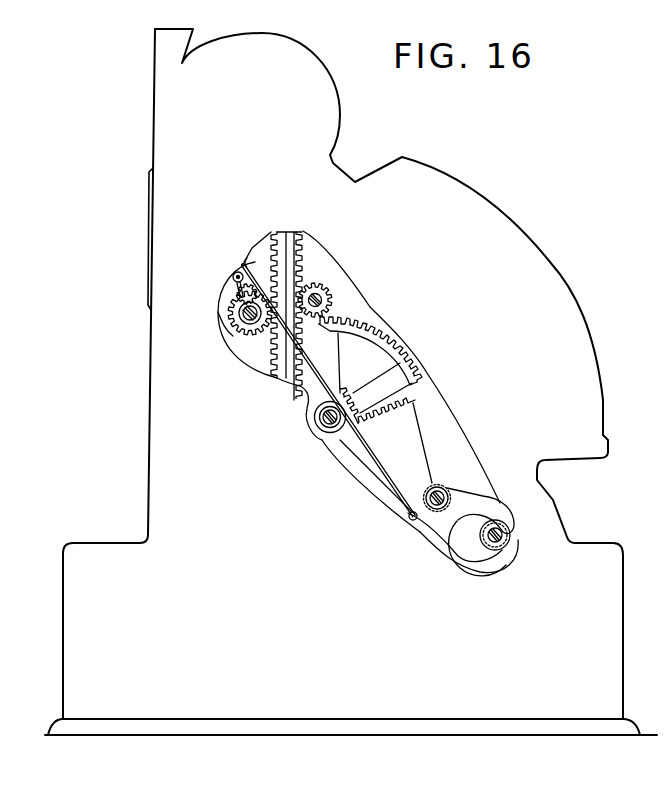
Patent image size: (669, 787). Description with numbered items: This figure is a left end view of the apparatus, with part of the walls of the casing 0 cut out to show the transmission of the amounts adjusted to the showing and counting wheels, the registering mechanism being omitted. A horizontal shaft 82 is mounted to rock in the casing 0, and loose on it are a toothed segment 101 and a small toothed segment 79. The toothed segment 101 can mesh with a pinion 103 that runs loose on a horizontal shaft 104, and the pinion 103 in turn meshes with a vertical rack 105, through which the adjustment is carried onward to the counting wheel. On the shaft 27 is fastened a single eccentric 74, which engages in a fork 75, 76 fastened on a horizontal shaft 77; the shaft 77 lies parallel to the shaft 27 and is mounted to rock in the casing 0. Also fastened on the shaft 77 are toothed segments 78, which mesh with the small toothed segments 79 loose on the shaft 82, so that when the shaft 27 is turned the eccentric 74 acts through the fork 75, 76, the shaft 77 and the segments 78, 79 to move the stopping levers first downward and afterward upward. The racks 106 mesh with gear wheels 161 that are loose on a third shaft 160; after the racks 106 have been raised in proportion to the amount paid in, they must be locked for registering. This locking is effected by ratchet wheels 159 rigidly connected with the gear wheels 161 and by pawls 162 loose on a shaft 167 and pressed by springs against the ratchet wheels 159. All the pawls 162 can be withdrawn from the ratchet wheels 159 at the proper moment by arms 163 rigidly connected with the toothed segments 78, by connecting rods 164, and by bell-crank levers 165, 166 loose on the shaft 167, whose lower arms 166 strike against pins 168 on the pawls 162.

The casing 0 is at (550, 264).
The shaft 27 is at (512, 537).
The eccentric 74 is at (498, 552).
The fork 75 is at (465, 557).
The fork 76 is at (490, 500).
The horizontal shaft 77 is at (443, 494).
The toothed segment 78 is at (420, 443).
The small toothed segment 79 is at (350, 390).
The horizontal shaft 82 is at (320, 421).
The toothed segment 101 is at (378, 370).
The pinion 103 is at (322, 290).
The horizontal shaft 104 is at (325, 298).
The vertical rack 105 is at (300, 238).
The rack 106 is at (272, 352).
The ratchet wheel 159 is at (232, 315).
The third shaft 160 is at (236, 336).
The gear wheel 161 is at (232, 333).
The pawl 162 is at (240, 295).
The arm 163 is at (411, 522).
The connecting rod 164 is at (300, 393).
The bell-crank lever 165 is at (251, 272).
The bell-crank lever lower arm 166 is at (248, 265).
The shaft 167 is at (236, 272).
The pin 168 is at (233, 277).